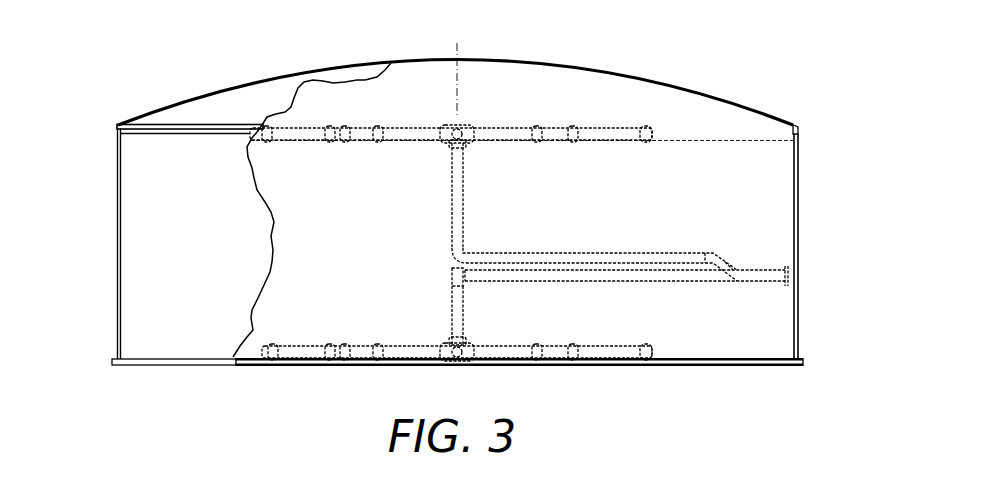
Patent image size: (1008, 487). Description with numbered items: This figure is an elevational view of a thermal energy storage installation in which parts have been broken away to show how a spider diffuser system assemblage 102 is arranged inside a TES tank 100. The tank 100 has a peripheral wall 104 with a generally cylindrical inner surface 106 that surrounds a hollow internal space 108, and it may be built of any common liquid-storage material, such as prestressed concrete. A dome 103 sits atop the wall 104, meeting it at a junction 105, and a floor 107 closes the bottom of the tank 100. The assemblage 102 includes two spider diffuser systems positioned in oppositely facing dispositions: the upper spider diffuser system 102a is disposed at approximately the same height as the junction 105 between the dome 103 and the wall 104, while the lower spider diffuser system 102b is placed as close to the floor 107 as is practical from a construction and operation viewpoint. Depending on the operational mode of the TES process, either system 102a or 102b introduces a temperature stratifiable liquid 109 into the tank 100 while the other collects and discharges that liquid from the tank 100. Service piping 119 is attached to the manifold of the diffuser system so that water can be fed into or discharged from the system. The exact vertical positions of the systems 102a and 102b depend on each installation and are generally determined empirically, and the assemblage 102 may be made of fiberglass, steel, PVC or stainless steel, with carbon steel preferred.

The TES tank 100 is at (800, 253).
The spider diffuser system assemblage 102 is at (402, 237).
The upper spider diffuser system 102a is at (558, 100).
The lower spider diffuser system 102b is at (633, 371).
The dome 103 is at (267, 90).
The peripheral wall 104 is at (117, 226).
The junction 105 is at (118, 124).
The cylindrical inner surface 106 is at (118, 286).
The floor 107 is at (178, 363).
The hollow internal space 108 is at (677, 180).
The temperature stratifiable liquid 109 is at (420, 311).
The service piping 119 is at (665, 259).